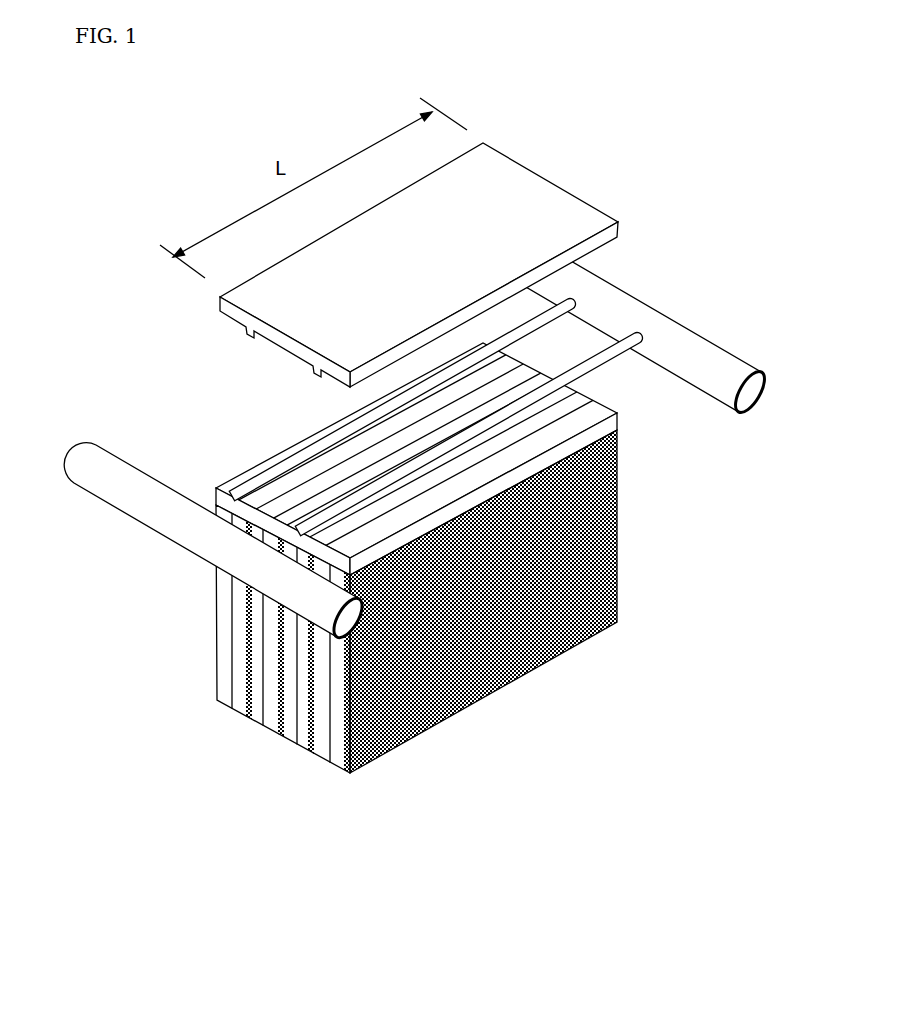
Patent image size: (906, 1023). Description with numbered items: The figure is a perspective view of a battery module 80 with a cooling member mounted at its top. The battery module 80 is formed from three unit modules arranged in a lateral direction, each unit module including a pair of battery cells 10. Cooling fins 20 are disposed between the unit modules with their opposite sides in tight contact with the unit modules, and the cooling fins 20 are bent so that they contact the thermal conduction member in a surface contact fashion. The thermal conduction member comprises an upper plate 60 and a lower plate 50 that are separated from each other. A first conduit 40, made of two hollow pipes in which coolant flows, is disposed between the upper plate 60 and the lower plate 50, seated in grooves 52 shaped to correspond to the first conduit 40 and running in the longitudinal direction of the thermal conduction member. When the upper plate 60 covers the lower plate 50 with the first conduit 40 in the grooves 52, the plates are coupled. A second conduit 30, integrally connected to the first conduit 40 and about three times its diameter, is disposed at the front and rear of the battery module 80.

The battery cells 10 is at (322, 742).
The cooling fins 20 is at (563, 624).
The second conduit 30 is at (146, 526).
The first conduit 40 is at (601, 370).
The lower plate 50 is at (435, 453).
The grooves 52 is at (250, 332).
The upper plate 60 is at (536, 195).
The battery module 80 is at (98, 145).